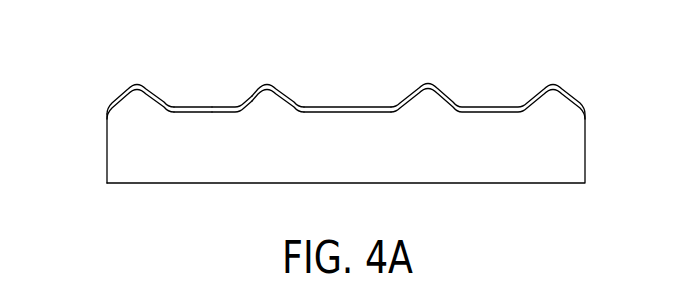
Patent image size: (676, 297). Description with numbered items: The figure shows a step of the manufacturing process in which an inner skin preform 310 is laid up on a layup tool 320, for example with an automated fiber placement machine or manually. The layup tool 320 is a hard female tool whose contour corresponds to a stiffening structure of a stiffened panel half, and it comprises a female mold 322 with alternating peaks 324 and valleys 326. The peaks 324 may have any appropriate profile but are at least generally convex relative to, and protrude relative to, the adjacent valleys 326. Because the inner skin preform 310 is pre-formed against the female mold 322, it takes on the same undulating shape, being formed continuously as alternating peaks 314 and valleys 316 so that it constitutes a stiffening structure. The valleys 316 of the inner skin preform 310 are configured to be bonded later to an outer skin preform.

The layup tool 320 is at (495, 166).
The female mold 322 is at (123, 140).
The peaks 324 is at (137, 84).
The inner skin preform 310 is at (200, 106).
The valleys 326 is at (218, 107).
The peaks 314 is at (276, 85).
The valleys 316 is at (345, 106).